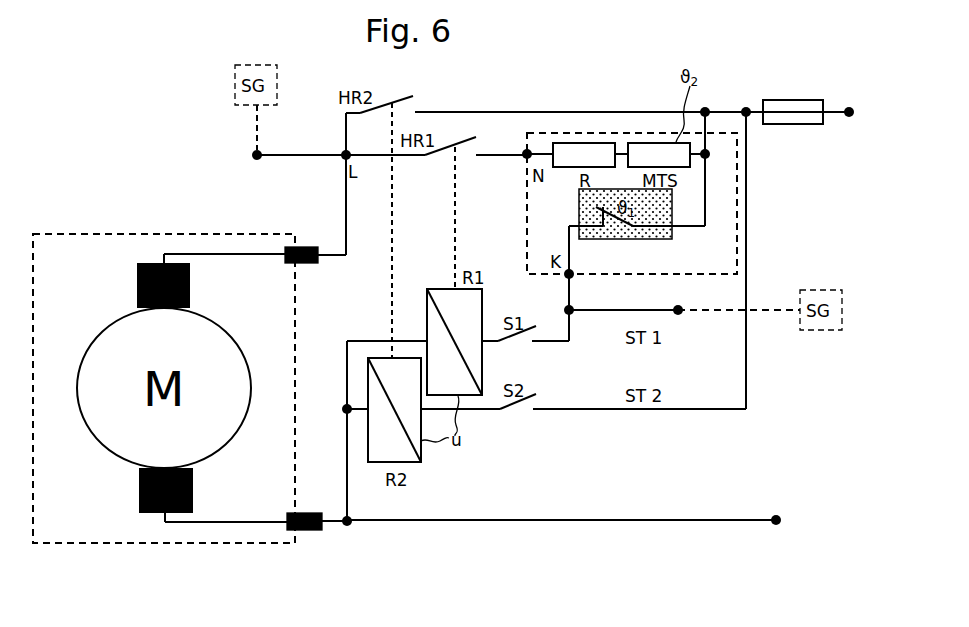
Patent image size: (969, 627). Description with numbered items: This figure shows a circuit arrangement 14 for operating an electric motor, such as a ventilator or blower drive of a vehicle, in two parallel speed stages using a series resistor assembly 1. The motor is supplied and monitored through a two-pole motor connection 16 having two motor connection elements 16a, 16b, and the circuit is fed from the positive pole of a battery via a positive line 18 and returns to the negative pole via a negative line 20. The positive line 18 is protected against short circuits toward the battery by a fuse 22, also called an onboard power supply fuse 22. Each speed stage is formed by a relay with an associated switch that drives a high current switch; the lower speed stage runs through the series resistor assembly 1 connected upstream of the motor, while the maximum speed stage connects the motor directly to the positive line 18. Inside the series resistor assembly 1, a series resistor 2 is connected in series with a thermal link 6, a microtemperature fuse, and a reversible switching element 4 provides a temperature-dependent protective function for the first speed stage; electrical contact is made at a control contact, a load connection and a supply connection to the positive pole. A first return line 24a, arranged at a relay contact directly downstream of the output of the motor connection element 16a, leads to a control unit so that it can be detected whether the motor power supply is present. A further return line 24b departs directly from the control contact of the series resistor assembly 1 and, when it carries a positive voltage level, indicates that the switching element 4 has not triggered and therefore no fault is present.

The series resistor assembly 1 is at (729, 164).
The series resistor 2 is at (582, 142).
The reversible switching element 4 is at (645, 240).
The thermal link 6 is at (641, 142).
The circuit arrangement 14 is at (92, 181).
The motor connection 16 is at (297, 372).
The motor connection element 16a is at (303, 264).
The motor connection element 16b is at (310, 531).
The positive line 18 is at (528, 111).
The negative line 20 is at (680, 518).
The fuse 22 is at (795, 100).
The first return line 24a is at (252, 156).
The further return line 24b is at (677, 305).